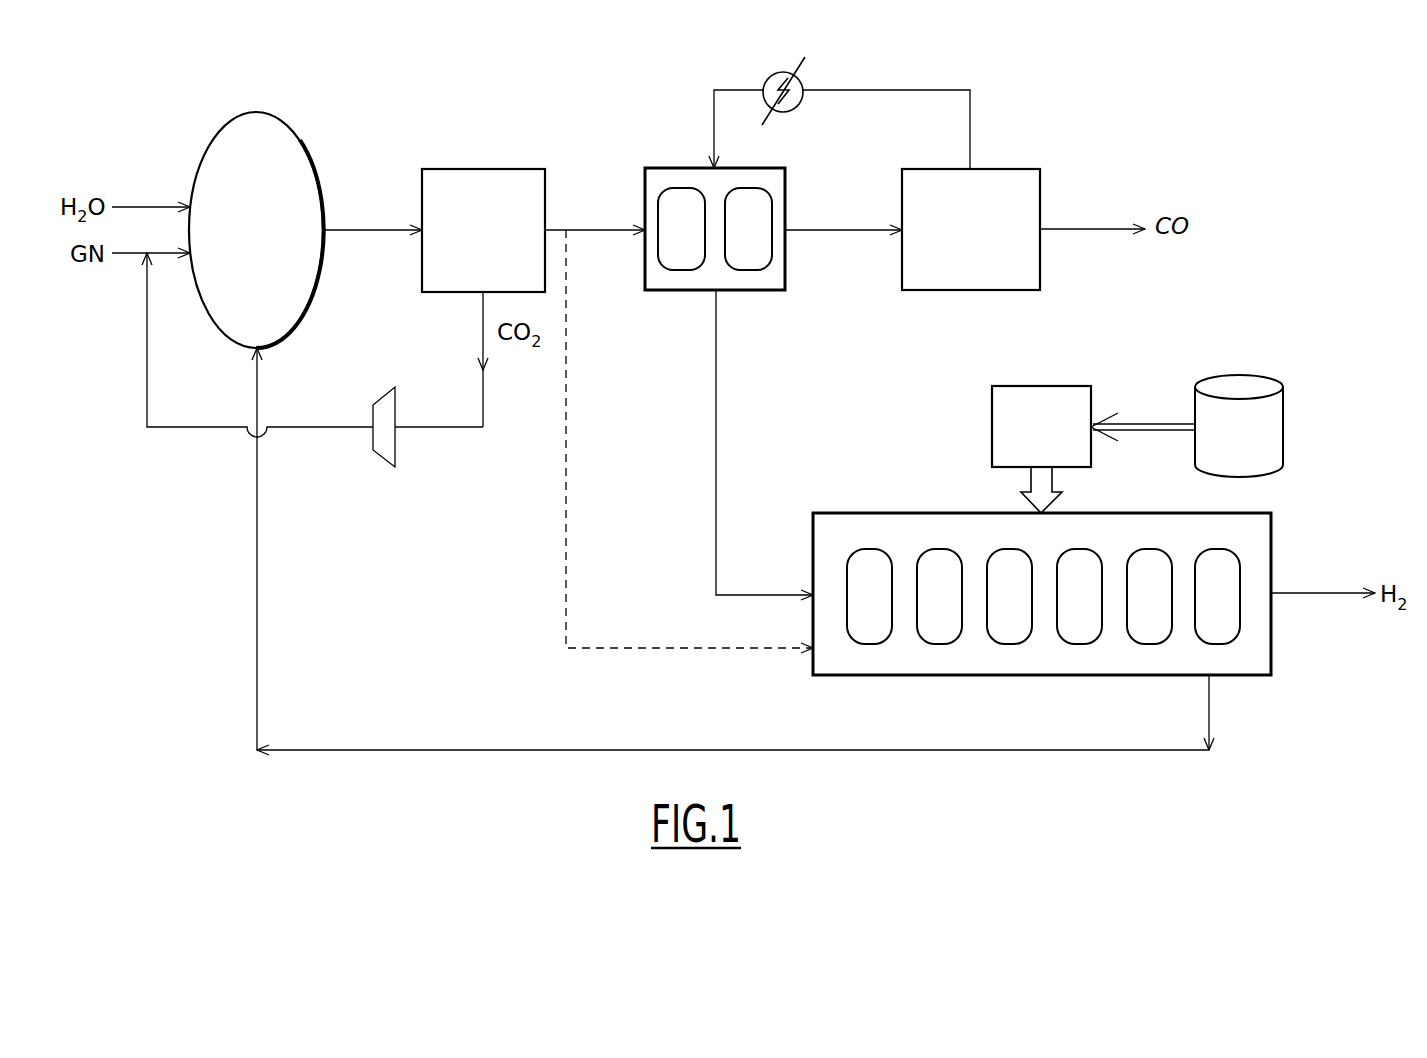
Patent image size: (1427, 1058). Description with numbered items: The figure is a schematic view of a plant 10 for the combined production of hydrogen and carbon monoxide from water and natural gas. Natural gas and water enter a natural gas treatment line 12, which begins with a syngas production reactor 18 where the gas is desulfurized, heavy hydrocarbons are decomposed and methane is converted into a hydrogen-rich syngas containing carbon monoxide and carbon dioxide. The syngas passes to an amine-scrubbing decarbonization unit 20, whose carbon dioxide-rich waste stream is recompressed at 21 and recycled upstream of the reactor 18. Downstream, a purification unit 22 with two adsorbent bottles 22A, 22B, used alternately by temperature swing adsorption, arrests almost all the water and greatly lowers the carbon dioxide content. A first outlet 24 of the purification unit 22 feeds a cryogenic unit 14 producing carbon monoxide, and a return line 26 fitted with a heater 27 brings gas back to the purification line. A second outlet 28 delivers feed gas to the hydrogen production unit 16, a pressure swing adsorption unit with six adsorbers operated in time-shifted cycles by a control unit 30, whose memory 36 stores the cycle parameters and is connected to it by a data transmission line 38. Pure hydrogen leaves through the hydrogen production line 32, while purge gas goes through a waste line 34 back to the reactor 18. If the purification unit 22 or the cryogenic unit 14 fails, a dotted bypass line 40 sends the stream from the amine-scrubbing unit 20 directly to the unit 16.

The plant 10 is at (205, 620).
The natural gas treatment line 12 is at (474, 122).
The cryogenic unit 14 is at (1030, 168).
The hydrogen production unit 16 is at (812, 553).
The syngas production reactor 18 is at (290, 318).
The amine-scrubbing decarbonization unit 20 is at (422, 280).
The recompression 21 is at (386, 460).
The purification unit 22 is at (696, 263).
The adsorbent bottle 22A is at (680, 260).
The adsorbent bottle 22B is at (750, 260).
The first outlet 24 is at (830, 228).
The return line 26 is at (862, 90).
The heater 27 is at (767, 72).
The second outlet 28 is at (716, 430).
The control unit 30 is at (1033, 412).
The hydrogen production line 32 is at (1315, 592).
The waste line 34 is at (657, 750).
The memory 36 is at (1254, 450).
The data transmission line 38 is at (1147, 424).
The bypass line 40 is at (566, 516).